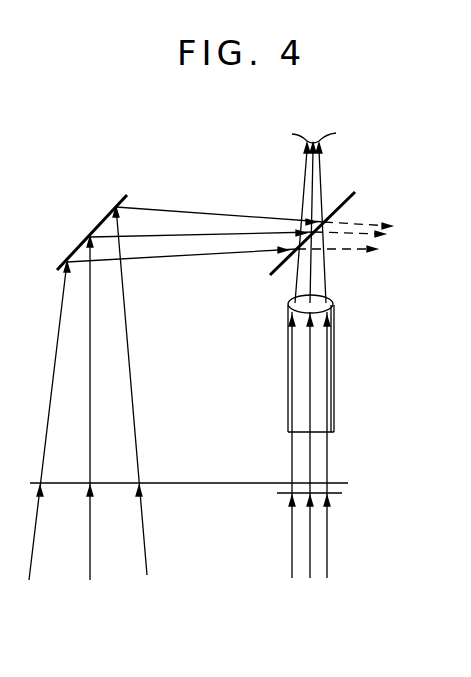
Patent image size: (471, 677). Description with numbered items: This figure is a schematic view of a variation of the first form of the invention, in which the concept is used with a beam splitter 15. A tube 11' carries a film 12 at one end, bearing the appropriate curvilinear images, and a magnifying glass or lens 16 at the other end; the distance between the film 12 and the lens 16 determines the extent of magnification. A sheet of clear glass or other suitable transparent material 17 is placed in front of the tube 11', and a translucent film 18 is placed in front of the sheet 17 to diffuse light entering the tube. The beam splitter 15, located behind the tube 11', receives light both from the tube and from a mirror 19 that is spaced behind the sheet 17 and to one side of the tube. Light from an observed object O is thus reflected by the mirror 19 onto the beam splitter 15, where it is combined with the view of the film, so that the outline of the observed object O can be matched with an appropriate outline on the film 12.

The object O is at (337, 131).
The beam splitter 15 is at (340, 200).
The mirror 19 is at (99, 222).
The magnifying glass or lens 16 is at (333, 302).
The tube 11' is at (336, 368).
The film 12 is at (320, 432).
The sheet of clear glass or transparent material 17 is at (188, 483).
The translucent film 18 is at (338, 494).